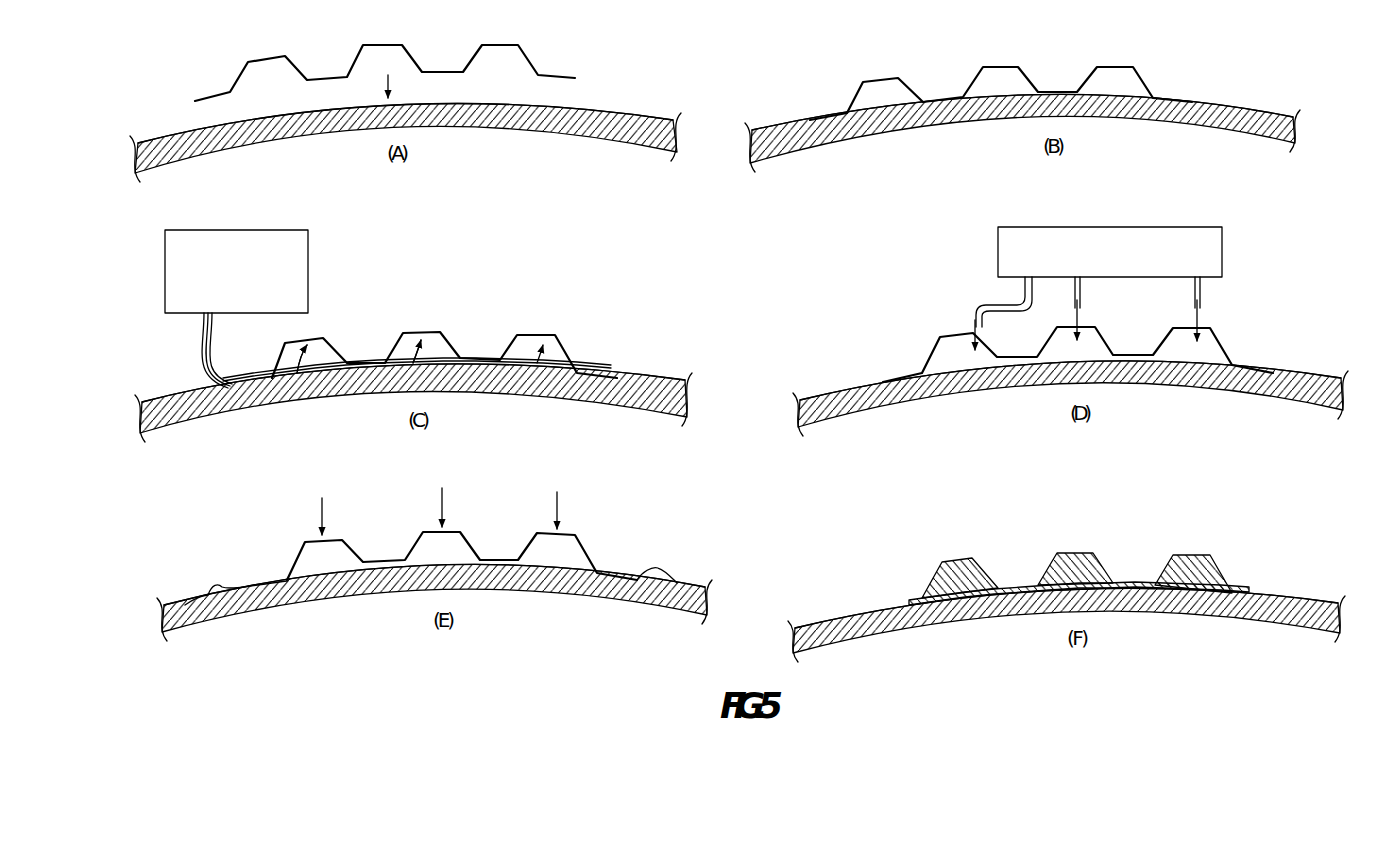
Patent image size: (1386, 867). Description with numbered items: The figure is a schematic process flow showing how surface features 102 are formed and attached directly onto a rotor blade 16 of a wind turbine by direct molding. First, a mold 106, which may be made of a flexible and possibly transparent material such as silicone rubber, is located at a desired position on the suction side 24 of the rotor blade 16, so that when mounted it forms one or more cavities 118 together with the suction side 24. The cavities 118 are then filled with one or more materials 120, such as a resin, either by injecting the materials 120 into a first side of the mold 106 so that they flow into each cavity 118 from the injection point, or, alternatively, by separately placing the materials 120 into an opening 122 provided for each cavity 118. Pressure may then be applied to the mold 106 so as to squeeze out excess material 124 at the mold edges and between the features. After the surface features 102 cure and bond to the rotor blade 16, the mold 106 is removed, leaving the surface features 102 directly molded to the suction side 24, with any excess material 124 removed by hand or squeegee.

The rotor blade 16 is at (616, 116).
The suction side 24 is at (173, 141).
The surface features 102 is at (975, 552).
The mold 106 is at (558, 72).
The cavities 118 is at (1103, 80).
The materials 120 is at (165, 273).
The opening 122 is at (1073, 307).
The excess material 124 is at (215, 580).